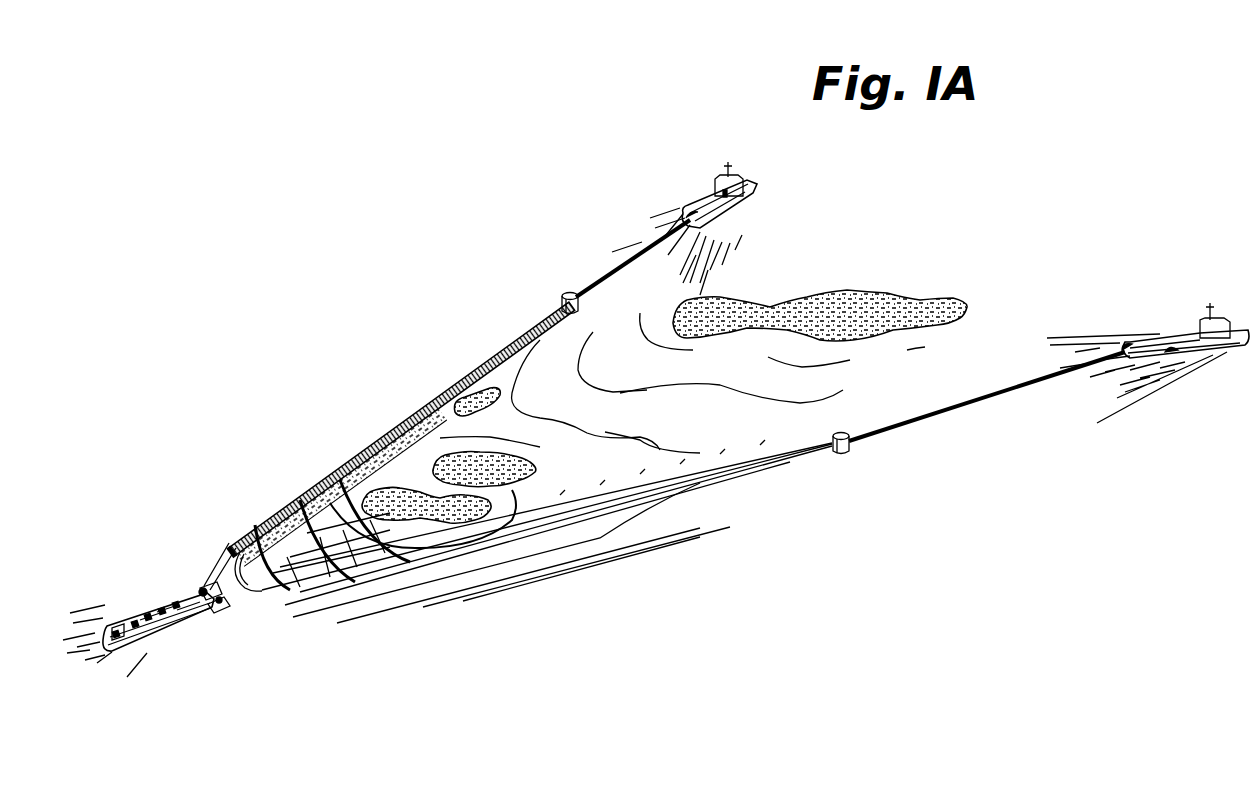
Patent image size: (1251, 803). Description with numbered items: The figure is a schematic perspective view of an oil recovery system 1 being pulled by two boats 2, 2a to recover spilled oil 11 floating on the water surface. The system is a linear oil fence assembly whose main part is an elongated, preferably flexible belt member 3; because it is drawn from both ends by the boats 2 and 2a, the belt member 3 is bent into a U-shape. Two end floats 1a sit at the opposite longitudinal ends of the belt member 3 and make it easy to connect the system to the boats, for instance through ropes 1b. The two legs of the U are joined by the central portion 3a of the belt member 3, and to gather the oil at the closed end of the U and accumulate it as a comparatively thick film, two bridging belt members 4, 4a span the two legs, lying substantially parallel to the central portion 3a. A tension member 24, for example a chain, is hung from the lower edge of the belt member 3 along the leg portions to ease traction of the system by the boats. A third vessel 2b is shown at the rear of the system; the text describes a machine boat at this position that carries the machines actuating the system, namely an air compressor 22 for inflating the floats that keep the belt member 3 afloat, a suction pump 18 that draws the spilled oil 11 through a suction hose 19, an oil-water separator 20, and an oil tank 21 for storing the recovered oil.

The oil recovery system 1 is at (423, 404).
The end float 1a is at (580, 306).
The rope 1b is at (628, 258).
The boat 2 is at (700, 196).
The boat 2a is at (1225, 352).
The third vessel 2b is at (143, 612).
The elongated belt member 3 is at (816, 458).
The central portion 3a is at (282, 595).
The bridging belt member 4 is at (340, 595).
The bridging belt member 4a is at (372, 598).
The spilled oil 11 is at (876, 293).
The suction pump 18 is at (200, 607).
The suction hose 19 is at (210, 585).
The oil-water separator 20 is at (177, 610).
The oil tank 21 is at (157, 612).
The air compressor 22 is at (140, 620).
The tension member 24 is at (565, 532).